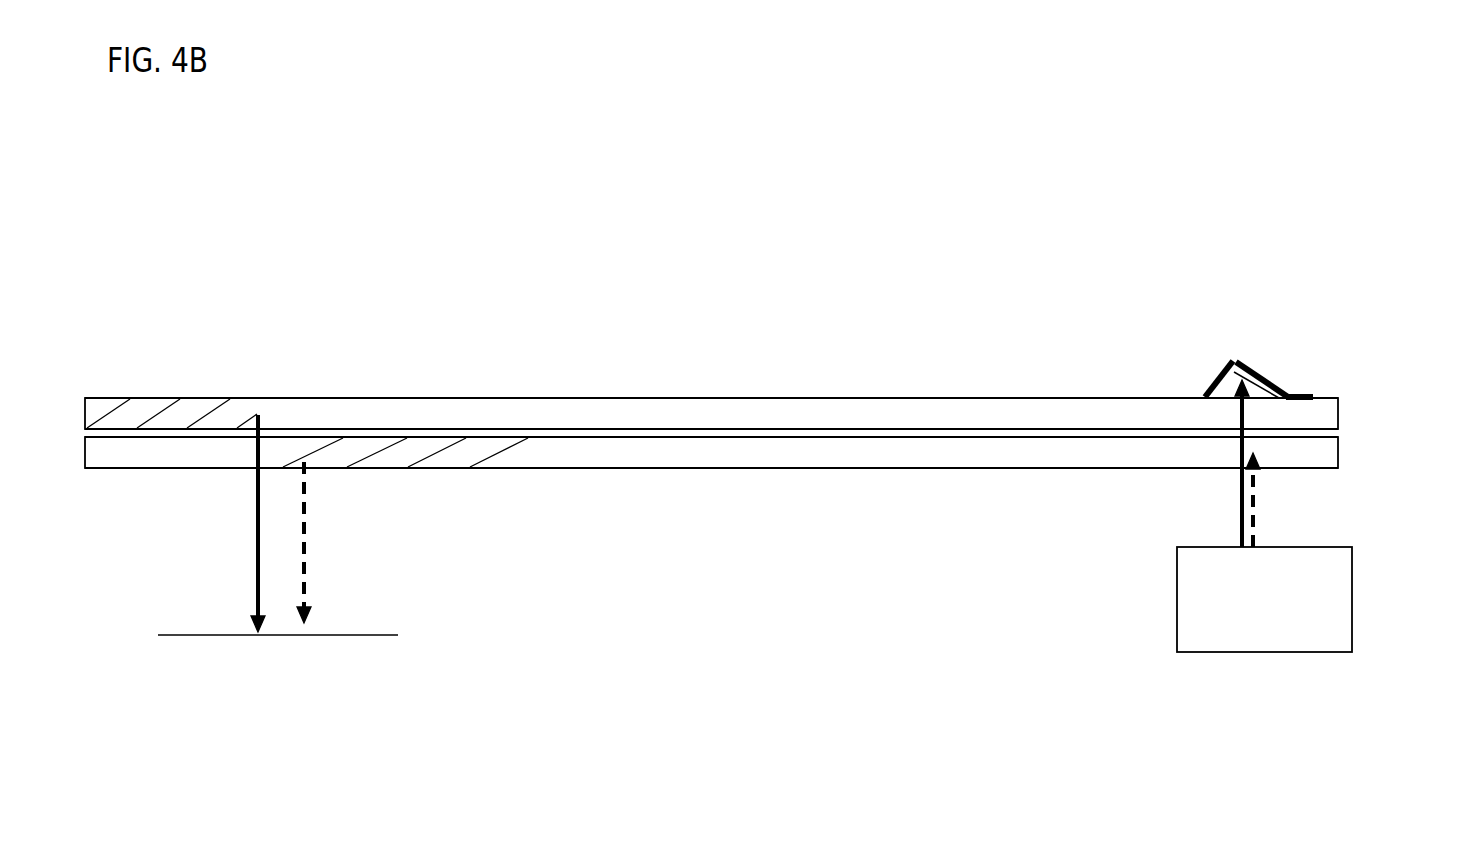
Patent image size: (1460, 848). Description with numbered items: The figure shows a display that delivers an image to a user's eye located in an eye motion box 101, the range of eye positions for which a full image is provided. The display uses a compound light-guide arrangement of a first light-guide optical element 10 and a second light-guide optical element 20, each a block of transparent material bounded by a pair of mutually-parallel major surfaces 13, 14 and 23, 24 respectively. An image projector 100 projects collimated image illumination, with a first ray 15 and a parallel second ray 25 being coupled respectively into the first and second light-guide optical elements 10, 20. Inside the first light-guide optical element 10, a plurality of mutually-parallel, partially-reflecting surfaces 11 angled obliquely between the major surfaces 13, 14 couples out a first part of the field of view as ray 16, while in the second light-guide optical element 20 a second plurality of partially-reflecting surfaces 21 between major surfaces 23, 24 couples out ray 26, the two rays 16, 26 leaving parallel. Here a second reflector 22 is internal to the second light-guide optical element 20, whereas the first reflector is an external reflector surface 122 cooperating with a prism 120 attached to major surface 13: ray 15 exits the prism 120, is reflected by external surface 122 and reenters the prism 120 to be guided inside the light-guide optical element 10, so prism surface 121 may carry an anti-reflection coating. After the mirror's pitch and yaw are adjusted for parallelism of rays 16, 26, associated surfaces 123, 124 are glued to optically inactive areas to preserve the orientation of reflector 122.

The first light-guide optical element 10 is at (711, 343).
The first plurality of partially-reflecting surfaces 11 is at (155, 396).
The major surface of first LOE 13 is at (595, 384).
The major surface of first LOE 14 is at (677, 414).
The first ray of image illumination 15 is at (1228, 463).
The coupled-out ray from first LOE 16 is at (245, 523).
The second light-guide optical element 20 is at (711, 469).
The second plurality of partially-reflecting surfaces 21 is at (380, 434).
The second reflector 22 is at (1271, 442).
The major surface of second LOE 23 is at (618, 452).
The major surface of second LOE 24 is at (658, 480).
The second ray of image illumination 25 is at (1269, 500).
The coupled-out ray from second LOE 26 is at (319, 542).
The image projector 100 is at (1264, 599).
The eye motion box 101 is at (278, 649).
The prism 120 is at (1265, 267).
The prism surface 121 is at (1269, 378).
The external reflector surface 122 is at (1262, 362).
The associated surface 123 is at (1198, 377).
The associated surface 124 is at (1317, 380).